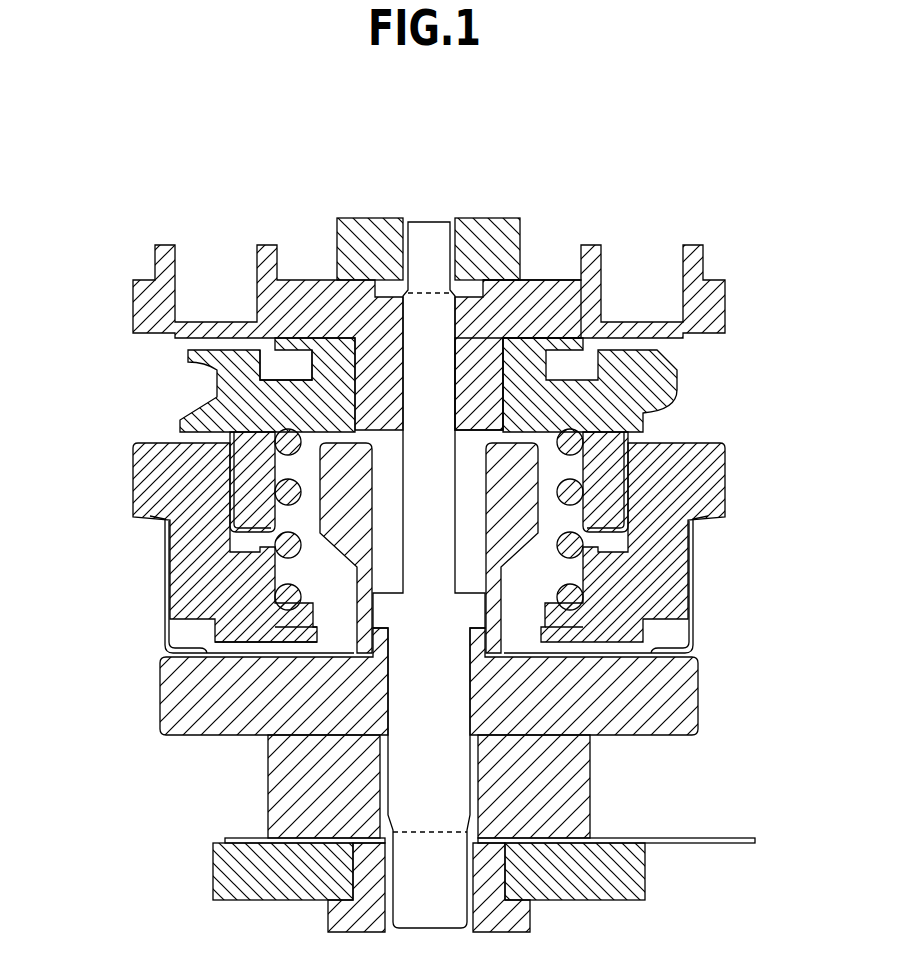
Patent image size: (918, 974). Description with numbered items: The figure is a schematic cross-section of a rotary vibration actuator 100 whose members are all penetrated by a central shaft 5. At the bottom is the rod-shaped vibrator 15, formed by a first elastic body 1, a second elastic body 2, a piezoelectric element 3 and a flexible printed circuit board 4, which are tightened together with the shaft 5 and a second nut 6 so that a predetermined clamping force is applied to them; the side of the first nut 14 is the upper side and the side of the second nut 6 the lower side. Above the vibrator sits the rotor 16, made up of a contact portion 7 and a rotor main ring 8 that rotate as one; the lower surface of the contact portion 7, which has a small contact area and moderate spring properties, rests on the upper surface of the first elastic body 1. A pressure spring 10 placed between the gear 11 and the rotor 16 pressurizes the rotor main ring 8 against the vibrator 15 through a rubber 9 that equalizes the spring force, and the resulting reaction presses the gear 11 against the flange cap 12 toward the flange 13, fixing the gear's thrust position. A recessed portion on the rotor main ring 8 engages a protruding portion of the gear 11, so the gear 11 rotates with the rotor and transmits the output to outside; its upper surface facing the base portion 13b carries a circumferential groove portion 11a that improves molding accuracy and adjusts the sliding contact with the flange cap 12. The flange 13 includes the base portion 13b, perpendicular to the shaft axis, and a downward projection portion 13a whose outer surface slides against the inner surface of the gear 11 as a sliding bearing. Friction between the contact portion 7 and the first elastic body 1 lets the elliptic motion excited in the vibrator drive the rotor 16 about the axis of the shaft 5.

The vibration actuator 100 is at (573, 134).
The first elastic body 1 is at (446, 692).
The second elastic body 2 is at (645, 870).
The piezoelectric element 3 is at (590, 780).
The flexible printed circuit board 4 is at (700, 835).
The shaft 5 is at (600, 640).
The second nut 6 is at (530, 920).
The contact portion 7 is at (166, 618).
The rotor main ring 8 is at (132, 484).
The rubber 9 is at (292, 624).
The pressure spring 10 is at (590, 548).
The gear 11 is at (216, 392).
The groove portion 11a is at (267, 372).
The flange cap 12 is at (590, 372).
The flange 13 is at (725, 300).
The projection portion 13a is at (495, 404).
The base portion 13b is at (556, 290).
The first nut 14 is at (490, 214).
The vibrator 15 is at (792, 593).
The rotor 16 is at (68, 442).